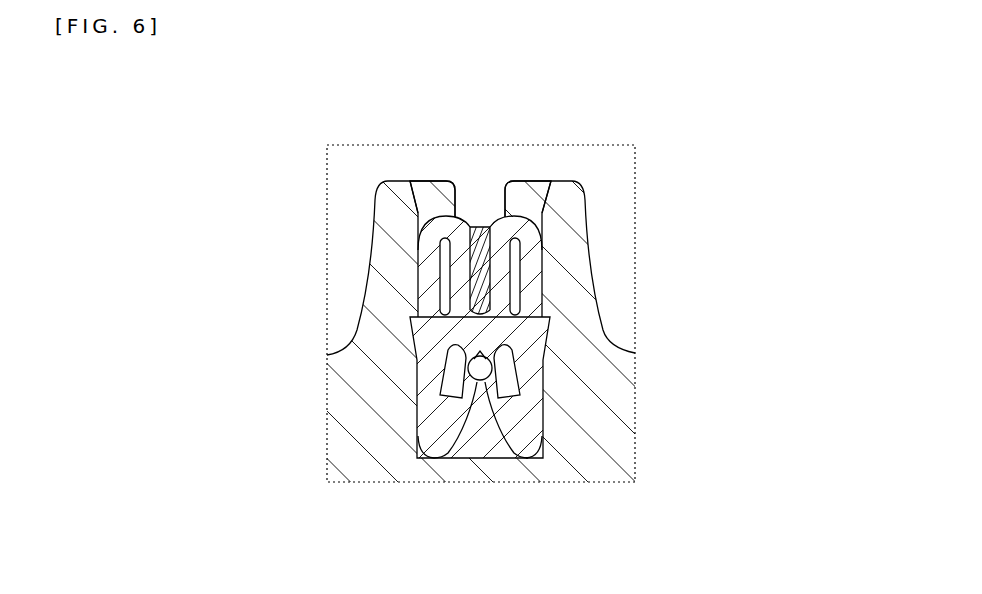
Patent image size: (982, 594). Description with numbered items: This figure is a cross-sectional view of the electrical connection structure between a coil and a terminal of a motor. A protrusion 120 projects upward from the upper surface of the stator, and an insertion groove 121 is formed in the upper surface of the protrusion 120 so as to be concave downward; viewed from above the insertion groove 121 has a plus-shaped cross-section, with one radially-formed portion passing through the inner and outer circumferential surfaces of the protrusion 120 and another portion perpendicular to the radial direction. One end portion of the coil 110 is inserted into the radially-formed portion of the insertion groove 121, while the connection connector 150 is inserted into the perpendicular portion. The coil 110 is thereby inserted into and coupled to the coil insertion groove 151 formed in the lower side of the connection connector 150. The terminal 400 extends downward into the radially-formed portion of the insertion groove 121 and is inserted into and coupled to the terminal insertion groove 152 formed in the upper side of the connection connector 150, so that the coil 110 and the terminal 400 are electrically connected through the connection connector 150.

The coil 110 is at (635, 458).
The protrusion 120 is at (578, 292).
The insertion groove 121 is at (537, 208).
The connection connector 150 is at (547, 340).
The coil insertion groove 151 is at (482, 385).
The terminal insertion groove 152 is at (545, 255).
The terminal 400 is at (480, 227).